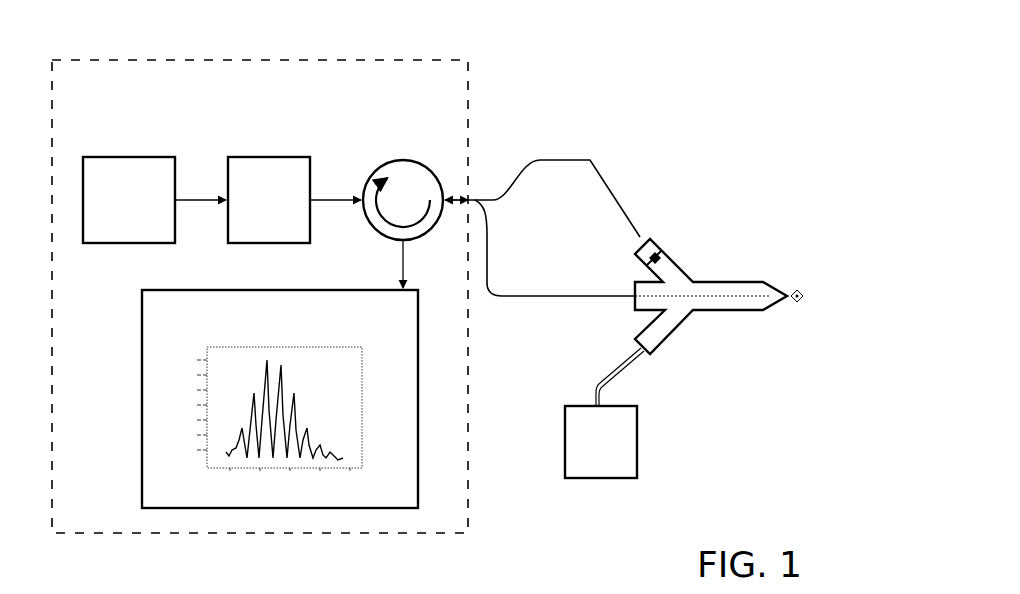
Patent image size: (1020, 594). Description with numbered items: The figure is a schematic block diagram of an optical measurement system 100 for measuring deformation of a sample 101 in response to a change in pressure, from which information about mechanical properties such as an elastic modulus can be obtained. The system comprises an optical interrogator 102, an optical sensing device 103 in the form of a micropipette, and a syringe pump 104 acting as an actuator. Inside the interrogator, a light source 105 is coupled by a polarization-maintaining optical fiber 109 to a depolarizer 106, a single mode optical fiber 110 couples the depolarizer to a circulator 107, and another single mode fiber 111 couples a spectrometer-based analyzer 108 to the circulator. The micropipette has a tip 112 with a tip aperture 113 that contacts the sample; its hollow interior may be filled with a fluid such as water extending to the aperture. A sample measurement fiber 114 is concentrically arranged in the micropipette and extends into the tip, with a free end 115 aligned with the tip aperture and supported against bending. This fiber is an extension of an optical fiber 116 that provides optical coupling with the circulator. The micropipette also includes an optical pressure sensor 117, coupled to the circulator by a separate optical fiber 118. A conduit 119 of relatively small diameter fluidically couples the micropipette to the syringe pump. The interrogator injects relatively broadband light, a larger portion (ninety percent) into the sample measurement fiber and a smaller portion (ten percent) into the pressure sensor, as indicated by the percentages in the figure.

The optical measurement system 100 is at (687, 83).
The sample 101 is at (799, 284).
The optical interrogator 102 is at (278, 40).
The optical sensing device 103 is at (733, 260).
The syringe pump 104 is at (628, 443).
The light source 105 is at (132, 165).
The depolarizer 106 is at (272, 165).
The circulator 107 is at (405, 160).
The spectrometer-based analyzer 108 is at (148, 372).
The polarization-maintaining optical fiber 109 is at (199, 199).
The single mode optical fiber 110 is at (338, 199).
The single mode fiber 111 is at (403, 262).
The tip 112 is at (770, 290).
The tip aperture 113 is at (797, 305).
The sample measurement fiber 114 is at (716, 300).
The free end 115 is at (784, 302).
The optical fiber 116 is at (560, 295).
The optical pressure sensor 117 is at (660, 255).
The separate optical fiber 118 is at (536, 159).
The conduit 119 is at (606, 374).